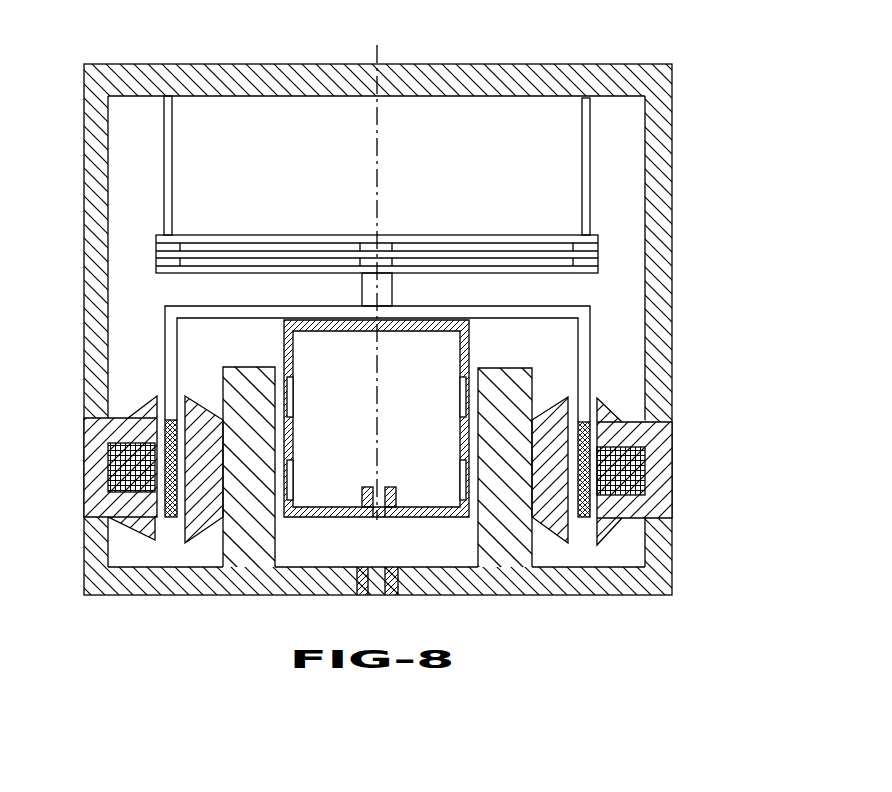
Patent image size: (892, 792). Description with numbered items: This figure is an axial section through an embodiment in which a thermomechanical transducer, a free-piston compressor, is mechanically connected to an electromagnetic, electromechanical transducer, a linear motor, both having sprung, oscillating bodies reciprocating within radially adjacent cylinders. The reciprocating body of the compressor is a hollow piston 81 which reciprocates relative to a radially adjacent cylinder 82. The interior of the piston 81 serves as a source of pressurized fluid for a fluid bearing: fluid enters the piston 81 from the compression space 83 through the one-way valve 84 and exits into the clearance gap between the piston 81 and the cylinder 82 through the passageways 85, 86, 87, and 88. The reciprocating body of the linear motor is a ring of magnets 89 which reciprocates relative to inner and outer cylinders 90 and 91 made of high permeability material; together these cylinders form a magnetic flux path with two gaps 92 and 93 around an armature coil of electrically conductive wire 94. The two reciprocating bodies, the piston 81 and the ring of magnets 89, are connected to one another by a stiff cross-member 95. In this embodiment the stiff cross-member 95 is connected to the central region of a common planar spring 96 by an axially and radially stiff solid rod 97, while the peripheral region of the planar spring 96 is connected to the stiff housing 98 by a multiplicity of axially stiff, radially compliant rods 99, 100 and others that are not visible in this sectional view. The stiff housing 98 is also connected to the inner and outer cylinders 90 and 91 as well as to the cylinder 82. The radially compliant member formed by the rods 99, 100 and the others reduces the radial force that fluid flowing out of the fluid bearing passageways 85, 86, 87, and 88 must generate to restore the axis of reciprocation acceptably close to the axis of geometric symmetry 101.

The hollow piston 81 is at (470, 347).
The cylinder 82 is at (262, 372).
The compression space 83 is at (423, 556).
The one-way valve 84 is at (377, 512).
The passageway 85 is at (290, 480).
The passageway 86 is at (290, 398).
The passageway 87 is at (462, 480).
The passageway 88 is at (462, 398).
The ring of magnets 89 is at (175, 517).
The inner cylinder 90 is at (205, 425).
The outer cylinder 91 is at (105, 500).
The gap 92 is at (580, 535).
The gap 93 is at (597, 393).
The armature coil 94 is at (610, 475).
The stiff cross-member 95 is at (262, 312).
The common planar spring 96 is at (300, 256).
The solid rod 97 is at (393, 285).
The stiff housing 98 is at (487, 78).
The radially compliant rod 99 is at (582, 160).
The radially compliant rod 100 is at (172, 157).
The axis of geometric symmetry 101 is at (378, 195).